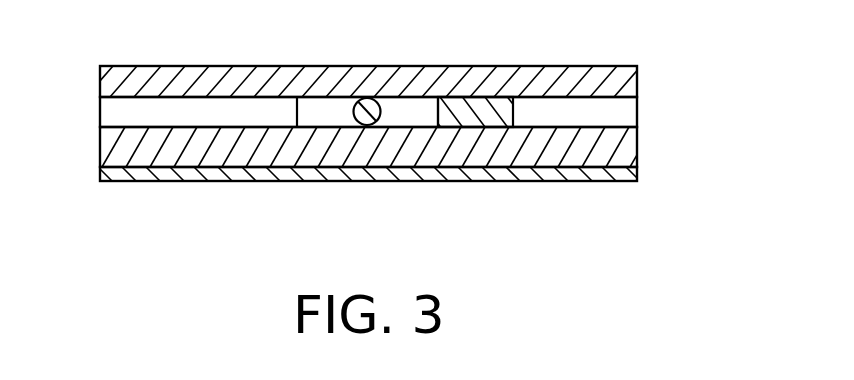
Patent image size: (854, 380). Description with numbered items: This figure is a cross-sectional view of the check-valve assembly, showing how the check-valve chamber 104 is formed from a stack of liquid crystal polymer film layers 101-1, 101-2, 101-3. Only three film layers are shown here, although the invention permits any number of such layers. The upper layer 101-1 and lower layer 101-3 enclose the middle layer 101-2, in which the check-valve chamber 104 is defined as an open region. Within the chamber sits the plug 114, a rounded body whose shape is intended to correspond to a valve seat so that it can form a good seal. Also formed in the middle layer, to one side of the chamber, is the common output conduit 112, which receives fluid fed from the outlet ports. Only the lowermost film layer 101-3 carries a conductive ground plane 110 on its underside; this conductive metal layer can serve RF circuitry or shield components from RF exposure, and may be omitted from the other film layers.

The LCP film layer 101-1 is at (637, 80).
The LCP film layer 101-2 is at (637, 115).
The lowermost film layer 101-3 is at (637, 150).
The check-valve chamber 104 is at (328, 113).
The conductive ground plane 110 is at (150, 182).
The output conduit 112 is at (577, 112).
The plug 114 is at (377, 122).